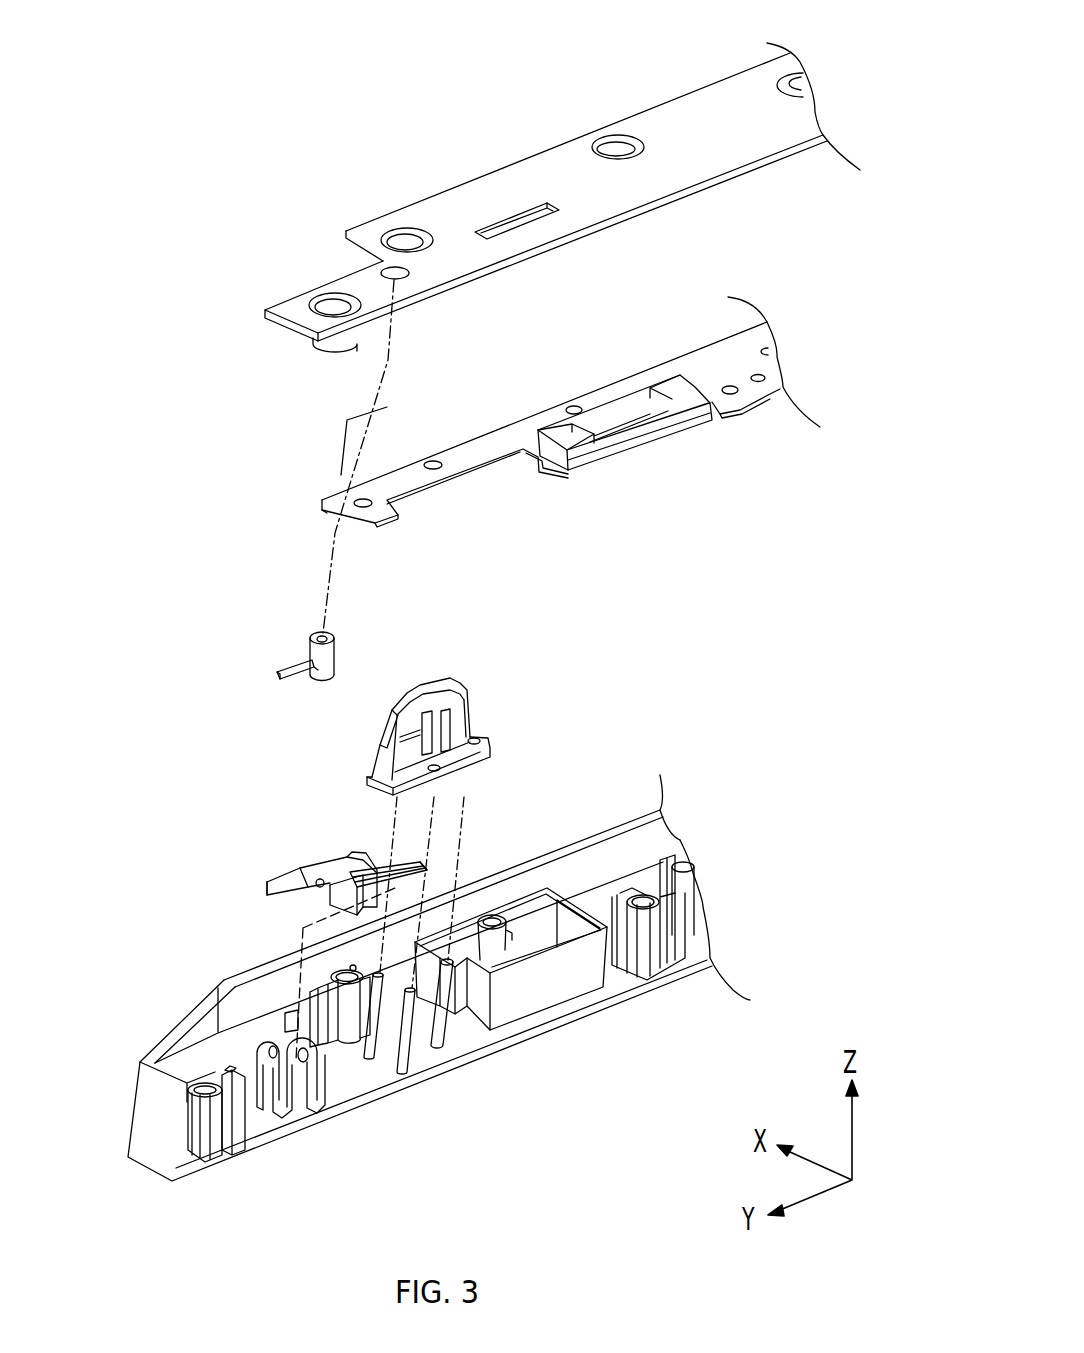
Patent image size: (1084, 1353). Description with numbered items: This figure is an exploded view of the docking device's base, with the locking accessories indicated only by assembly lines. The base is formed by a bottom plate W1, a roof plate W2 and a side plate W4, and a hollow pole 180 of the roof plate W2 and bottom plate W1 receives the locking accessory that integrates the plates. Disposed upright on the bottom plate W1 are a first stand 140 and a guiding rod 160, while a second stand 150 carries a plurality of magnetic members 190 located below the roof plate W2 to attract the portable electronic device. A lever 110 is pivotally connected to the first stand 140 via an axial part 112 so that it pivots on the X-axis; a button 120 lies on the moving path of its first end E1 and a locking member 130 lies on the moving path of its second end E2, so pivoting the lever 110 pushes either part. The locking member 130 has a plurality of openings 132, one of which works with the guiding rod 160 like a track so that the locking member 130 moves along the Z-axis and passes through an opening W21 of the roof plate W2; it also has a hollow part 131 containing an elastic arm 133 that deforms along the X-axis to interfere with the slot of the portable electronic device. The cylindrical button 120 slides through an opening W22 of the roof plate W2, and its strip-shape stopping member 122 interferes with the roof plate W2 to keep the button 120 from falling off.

The lever 110 is at (343, 867).
The axial part 112 is at (308, 887).
The button 120 is at (333, 657).
The strip-shape stopping member 122 is at (293, 667).
The locking member 130 is at (476, 704).
The hollow part 131 is at (435, 768).
The openings 132 is at (438, 717).
The elastic arm 133 is at (423, 718).
The first stand 140 is at (268, 1105).
The second stand 150 is at (728, 358).
The guiding rod 160 is at (370, 1058).
The hollow pole 180 is at (197, 1147).
The magnetic members 190 is at (633, 410).
The bottom plate W1 is at (439, 999).
The roof plate W2 is at (562, 176).
The opening W21 is at (522, 221).
The opening W22 is at (398, 271).
The side plate W4 is at (612, 828).
The first end E1 is at (267, 883).
The second end E2 is at (428, 871).